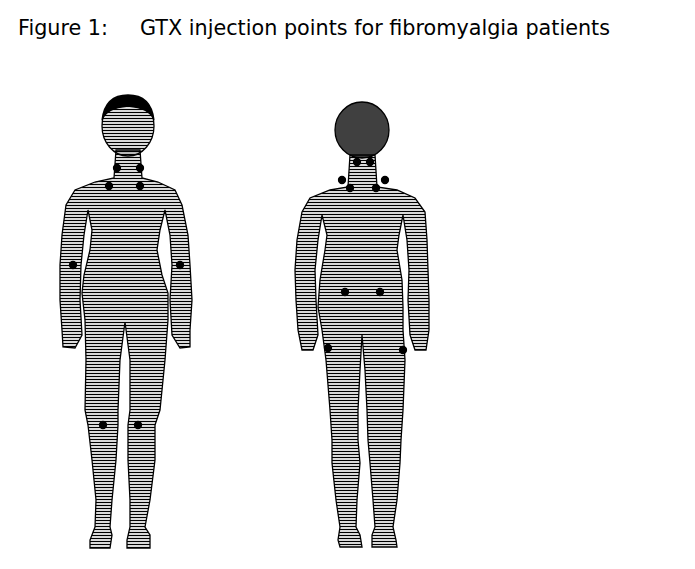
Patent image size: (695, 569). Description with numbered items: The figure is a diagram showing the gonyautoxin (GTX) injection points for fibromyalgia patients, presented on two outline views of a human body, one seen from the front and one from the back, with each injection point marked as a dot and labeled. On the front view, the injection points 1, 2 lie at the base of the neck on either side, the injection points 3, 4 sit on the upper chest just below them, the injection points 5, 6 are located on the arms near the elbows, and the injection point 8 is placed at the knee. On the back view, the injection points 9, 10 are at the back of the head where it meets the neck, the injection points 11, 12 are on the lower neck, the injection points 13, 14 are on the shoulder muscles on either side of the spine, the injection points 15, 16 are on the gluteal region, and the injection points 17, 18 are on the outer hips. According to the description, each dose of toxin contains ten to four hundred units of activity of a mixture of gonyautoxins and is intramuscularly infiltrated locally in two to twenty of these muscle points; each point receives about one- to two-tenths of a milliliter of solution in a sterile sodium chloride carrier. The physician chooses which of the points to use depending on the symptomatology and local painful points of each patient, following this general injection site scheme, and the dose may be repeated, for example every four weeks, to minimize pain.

The injection point 1 (left anterior neck) 1 is at (111, 164).
The injection point 2 (right anterior neck) 2 is at (145, 164).
The injection point 3 (left upper chest) 3 is at (104, 193).
The injection point 4 (right upper chest) 4 is at (147, 193).
The injection point 5 (left elbow) 5 is at (65, 265).
The injection point 6 (right elbow) 6 is at (188, 265).
The injection point 8 (right knee) 8 is at (148, 425).
The injection point 9 (left occiput) 9 is at (349, 162).
The injection point 10 (right occiput) 10 is at (381, 162).
The injection point 11 (left lower neck) 11 is at (333, 176).
The injection point 12 (right lower neck) 12 is at (395, 177).
The injection point 13 (left trapezius) 13 is at (345, 187).
The injection point 14 (right trapezius) 14 is at (382, 188).
The injection point 15 (left gluteal) 15 is at (337, 287).
The injection point 16 (right gluteal) 16 is at (388, 287).
The injection point 17 (left greater trochanter) 17 is at (320, 357).
The injection point 18 (right greater trochanter) 18 is at (411, 358).